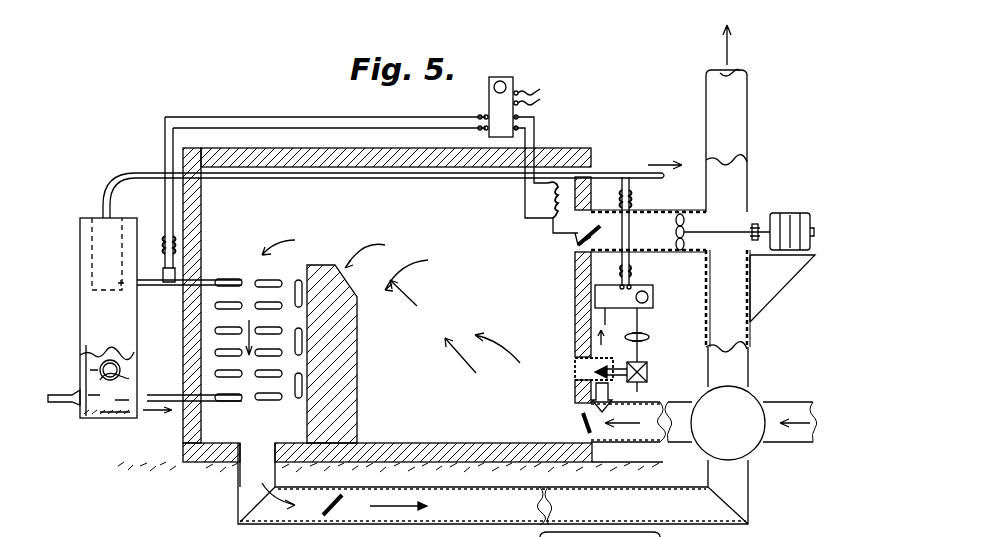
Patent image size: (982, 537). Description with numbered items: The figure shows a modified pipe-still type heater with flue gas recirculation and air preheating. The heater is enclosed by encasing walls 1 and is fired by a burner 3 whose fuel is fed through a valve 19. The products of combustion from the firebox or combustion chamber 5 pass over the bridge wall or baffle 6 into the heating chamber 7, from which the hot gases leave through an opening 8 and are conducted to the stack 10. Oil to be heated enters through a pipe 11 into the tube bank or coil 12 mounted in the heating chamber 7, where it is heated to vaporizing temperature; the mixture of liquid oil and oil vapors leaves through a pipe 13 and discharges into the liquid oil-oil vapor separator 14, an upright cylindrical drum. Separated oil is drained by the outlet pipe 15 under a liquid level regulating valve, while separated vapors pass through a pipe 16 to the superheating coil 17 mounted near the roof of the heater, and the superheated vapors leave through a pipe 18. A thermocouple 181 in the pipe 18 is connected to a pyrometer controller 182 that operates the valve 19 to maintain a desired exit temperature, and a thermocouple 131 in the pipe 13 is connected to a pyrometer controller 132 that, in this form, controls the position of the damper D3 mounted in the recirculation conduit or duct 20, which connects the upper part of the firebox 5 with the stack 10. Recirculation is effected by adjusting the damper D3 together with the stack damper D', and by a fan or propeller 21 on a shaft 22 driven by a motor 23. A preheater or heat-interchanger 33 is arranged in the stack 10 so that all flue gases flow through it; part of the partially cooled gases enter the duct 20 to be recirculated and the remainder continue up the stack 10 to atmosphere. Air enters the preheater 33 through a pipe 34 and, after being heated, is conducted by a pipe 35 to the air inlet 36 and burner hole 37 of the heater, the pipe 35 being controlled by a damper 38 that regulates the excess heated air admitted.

The encasing walls 1 is at (410, 140).
The burner 3 is at (627, 370).
The firebox or combustion chamber 5 is at (432, 308).
The bridge wall or baffle 6 is at (340, 368).
The heating region or chamber 7 is at (260, 297).
The opening 8 is at (260, 446).
The stack 10 is at (740, 368).
The pipe 11 is at (170, 390).
The tube bank or coil 12 is at (214, 332).
The pipe 13 is at (164, 240).
The thermocouple 131 is at (135, 265).
The pyrometer controller 132 is at (489, 100).
The liquid oil—oil vapor separator 14 is at (90, 327).
The outlet pipe 15 is at (62, 405).
The pipe 16 is at (150, 177).
The heating element or coil 17 is at (425, 180).
The pipe 18 is at (590, 180).
The thermocouple 181 is at (667, 154).
The pyrometer controller 182 is at (660, 303).
The valve 19 is at (645, 342).
The conduit or duct 20 is at (631, 256).
The fan or propeller 21 is at (678, 218).
The shaft 22 is at (755, 222).
The motor 23 is at (796, 208).
The preheater or heat-interchanger 33 is at (728, 423).
The pipe 34 is at (800, 445).
The pipe 35 is at (662, 408).
The air inlet 36 is at (575, 432).
The burner hole 37 is at (577, 365).
The damper 38 is at (580, 418).
The damper D' is at (747, 118).
The damper D3 is at (572, 242).